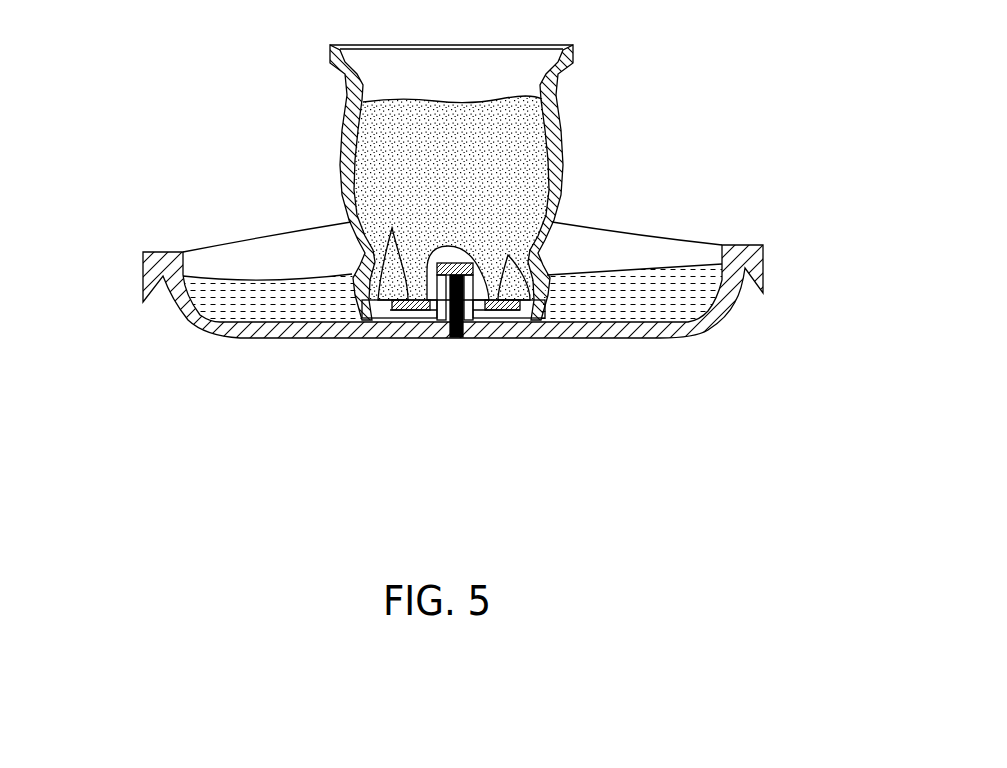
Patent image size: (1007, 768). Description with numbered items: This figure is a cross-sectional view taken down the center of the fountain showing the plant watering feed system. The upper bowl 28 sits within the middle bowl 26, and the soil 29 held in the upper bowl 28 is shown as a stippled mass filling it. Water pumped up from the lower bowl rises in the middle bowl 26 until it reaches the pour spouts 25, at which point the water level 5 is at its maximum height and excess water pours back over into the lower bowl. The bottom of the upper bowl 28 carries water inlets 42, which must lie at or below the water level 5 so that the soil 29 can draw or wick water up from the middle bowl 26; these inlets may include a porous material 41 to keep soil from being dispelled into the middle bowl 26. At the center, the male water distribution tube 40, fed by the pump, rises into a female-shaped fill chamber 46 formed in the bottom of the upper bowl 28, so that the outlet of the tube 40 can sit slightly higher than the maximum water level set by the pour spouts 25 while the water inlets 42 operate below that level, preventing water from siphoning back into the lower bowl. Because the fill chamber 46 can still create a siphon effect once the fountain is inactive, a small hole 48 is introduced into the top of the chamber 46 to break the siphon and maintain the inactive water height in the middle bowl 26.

The water level 5 is at (683, 298).
The pour spouts 25 is at (736, 247).
The middle bowl 26 is at (170, 302).
The upper bowl 28 is at (567, 50).
The soil 29 is at (512, 174).
The water distribution tube 40 is at (457, 312).
The porous material 41 is at (392, 228).
The water inlets 42 is at (412, 308).
The fill chamber 46 is at (480, 315).
The small hole 48 is at (430, 308).